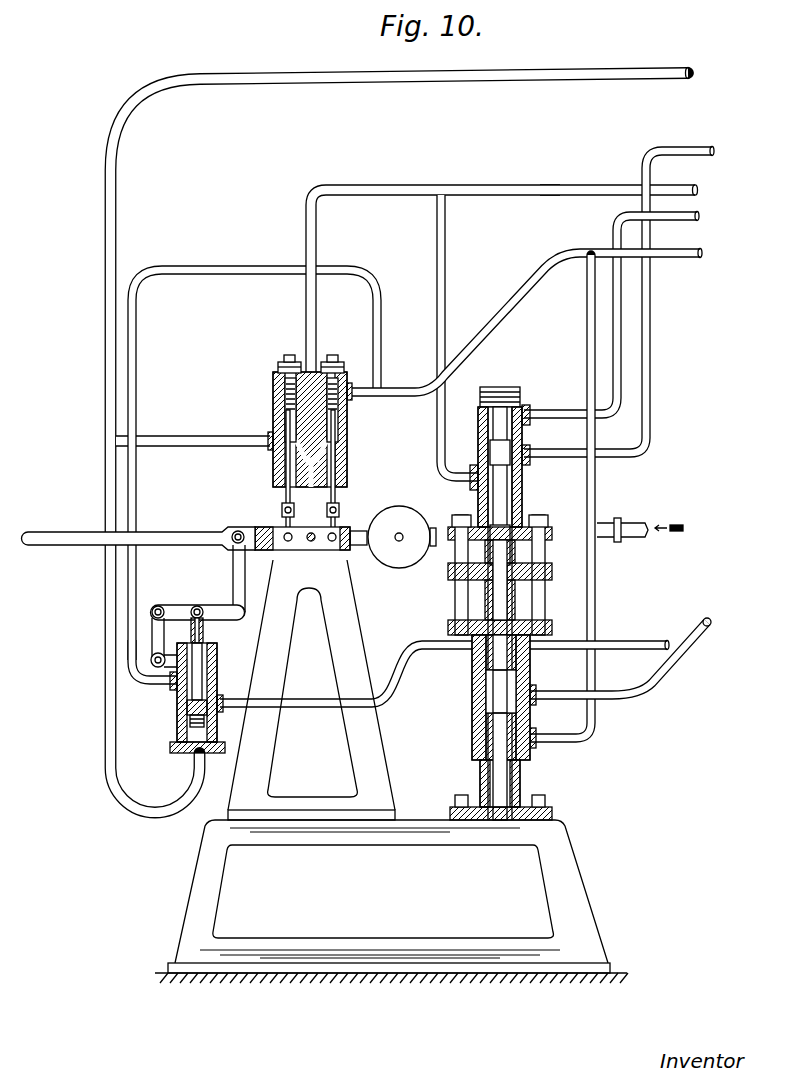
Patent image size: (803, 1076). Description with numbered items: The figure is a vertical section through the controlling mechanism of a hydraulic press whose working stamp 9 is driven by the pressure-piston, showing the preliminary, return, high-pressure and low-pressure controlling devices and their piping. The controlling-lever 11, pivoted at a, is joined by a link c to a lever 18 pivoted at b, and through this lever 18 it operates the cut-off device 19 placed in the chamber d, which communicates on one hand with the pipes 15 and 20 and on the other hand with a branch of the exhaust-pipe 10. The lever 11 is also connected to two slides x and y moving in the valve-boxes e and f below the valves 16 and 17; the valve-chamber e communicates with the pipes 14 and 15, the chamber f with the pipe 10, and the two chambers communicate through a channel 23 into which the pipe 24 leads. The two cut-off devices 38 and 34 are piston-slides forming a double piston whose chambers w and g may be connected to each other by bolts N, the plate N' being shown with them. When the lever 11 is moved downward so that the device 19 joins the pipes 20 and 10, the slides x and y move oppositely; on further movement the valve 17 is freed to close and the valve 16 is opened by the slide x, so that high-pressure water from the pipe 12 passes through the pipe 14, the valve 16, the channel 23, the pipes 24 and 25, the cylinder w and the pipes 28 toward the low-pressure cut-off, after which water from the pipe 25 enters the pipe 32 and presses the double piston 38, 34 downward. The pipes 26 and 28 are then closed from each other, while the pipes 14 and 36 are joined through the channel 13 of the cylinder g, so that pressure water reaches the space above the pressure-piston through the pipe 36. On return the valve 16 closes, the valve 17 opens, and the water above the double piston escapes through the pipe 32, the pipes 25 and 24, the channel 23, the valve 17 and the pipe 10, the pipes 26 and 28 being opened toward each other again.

The working stamp 9 is at (478, 712).
The exhaust-conduit 10 is at (293, 85).
The controlling-lever 11 is at (165, 531).
The high-pressure pipe 12 is at (648, 524).
The channel 13 is at (537, 742).
The pipe 14 is at (668, 258).
The pipe 15 is at (263, 274).
The valve 16 is at (346, 423).
The valve 17 is at (277, 412).
The lever 18 is at (195, 604).
The cut-off device 19 is at (182, 706).
The pipe 20 is at (640, 641).
The channel 23 is at (311, 464).
The pipe 24 is at (316, 322).
The pipe 25 is at (495, 186).
The pipe 26 is at (445, 268).
The pipe 28 is at (679, 150).
The pipe 32 is at (669, 217).
The cut-off device 34 is at (516, 700).
The pipe 36 is at (676, 650).
The cut-off device 38 is at (513, 505).
The pivot a is at (311, 555).
The pivot b is at (163, 605).
The link c is at (240, 584).
The chamber d is at (176, 749).
The valve-chamber e is at (346, 472).
The valve-chamber f is at (274, 457).
The chamber w is at (479, 424).
The slide x is at (340, 495).
The slide y is at (283, 490).
The bolts N is at (485, 587).
The plate N' is at (510, 575).